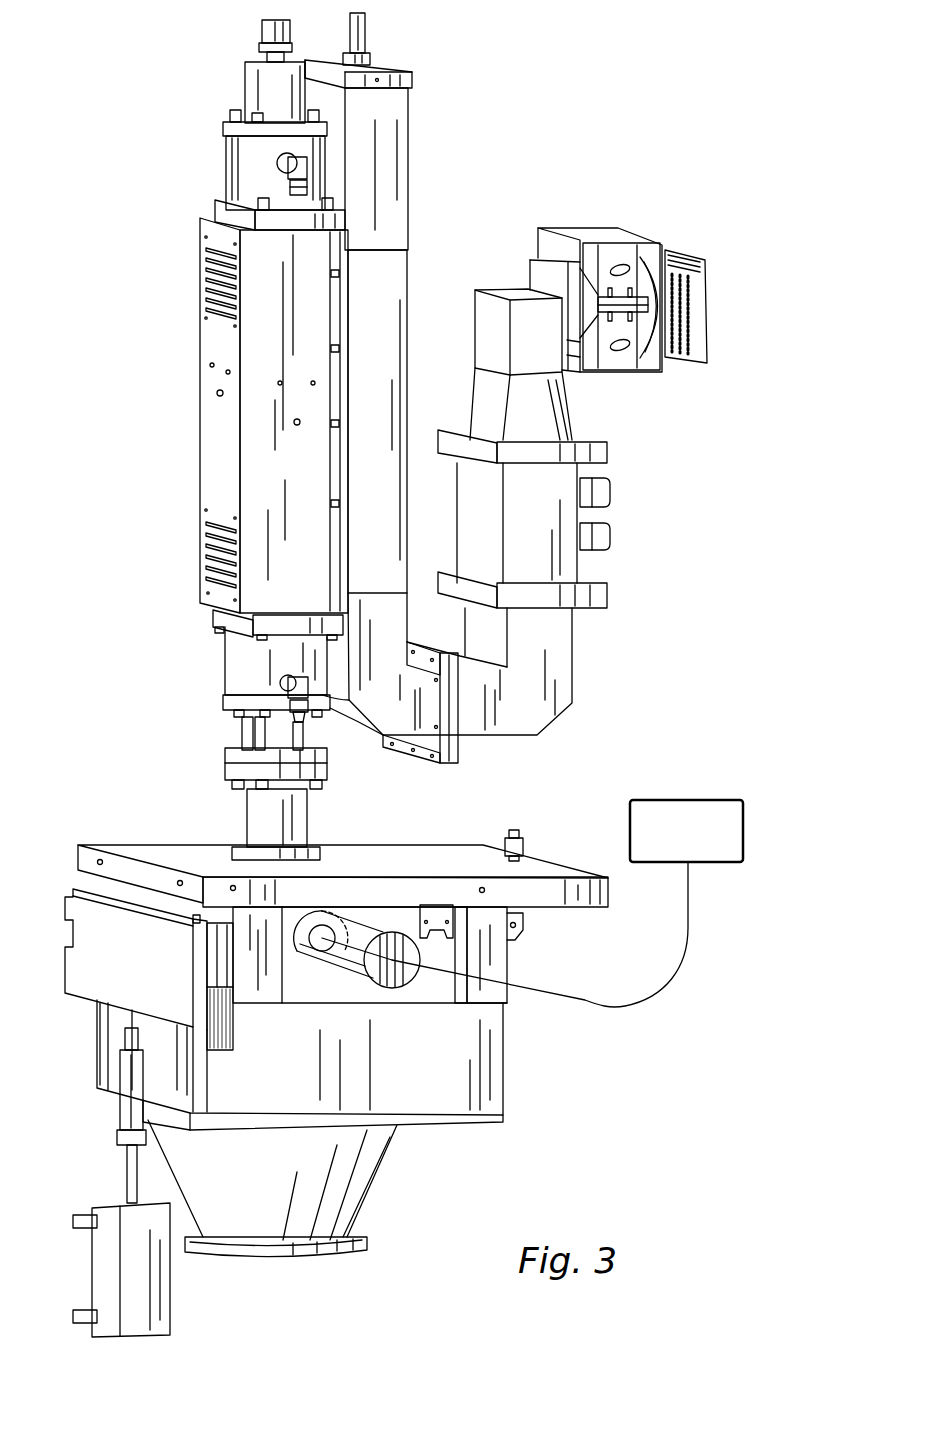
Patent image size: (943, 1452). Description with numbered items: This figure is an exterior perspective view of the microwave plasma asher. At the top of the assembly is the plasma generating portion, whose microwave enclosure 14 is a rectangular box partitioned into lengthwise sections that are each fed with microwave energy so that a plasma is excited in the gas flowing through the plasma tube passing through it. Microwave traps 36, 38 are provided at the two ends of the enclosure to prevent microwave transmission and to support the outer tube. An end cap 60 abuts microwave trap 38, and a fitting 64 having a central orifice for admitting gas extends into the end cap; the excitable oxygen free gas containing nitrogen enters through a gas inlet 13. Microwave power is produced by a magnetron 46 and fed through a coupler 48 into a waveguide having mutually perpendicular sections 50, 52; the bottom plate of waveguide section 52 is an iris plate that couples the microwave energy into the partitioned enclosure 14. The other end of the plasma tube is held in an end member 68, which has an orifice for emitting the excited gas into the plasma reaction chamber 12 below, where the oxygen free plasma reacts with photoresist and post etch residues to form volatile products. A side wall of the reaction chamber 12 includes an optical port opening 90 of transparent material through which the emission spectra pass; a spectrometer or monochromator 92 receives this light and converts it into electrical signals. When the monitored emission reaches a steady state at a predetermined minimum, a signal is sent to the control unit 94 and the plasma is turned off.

The plasma reaction chamber 12 is at (507, 1093).
The gas inlet 13 is at (305, 167).
The microwave enclosure 14 is at (200, 434).
The microwave trap 36 is at (225, 667).
The microwave trap 38 is at (253, 163).
The magnetron 46 is at (675, 372).
The coupler 48 is at (573, 572).
The waveguide section 50 is at (520, 735).
The waveguide section 52 is at (407, 390).
The end cap 60 is at (273, 80).
The fitting 64 is at (267, 32).
The end member 68 is at (307, 813).
The optical port opening 90 is at (320, 910).
The spectrometer or monochromator 92 is at (352, 965).
The control unit 94 is at (710, 800).